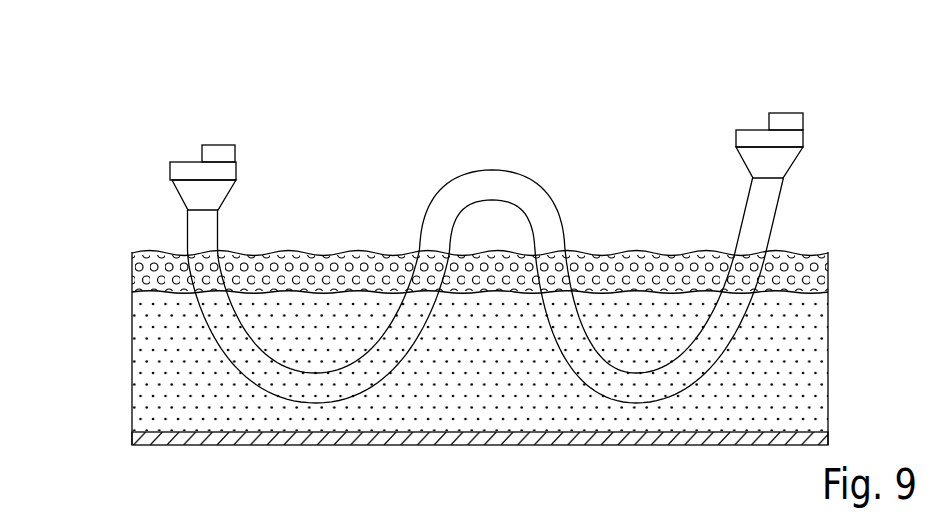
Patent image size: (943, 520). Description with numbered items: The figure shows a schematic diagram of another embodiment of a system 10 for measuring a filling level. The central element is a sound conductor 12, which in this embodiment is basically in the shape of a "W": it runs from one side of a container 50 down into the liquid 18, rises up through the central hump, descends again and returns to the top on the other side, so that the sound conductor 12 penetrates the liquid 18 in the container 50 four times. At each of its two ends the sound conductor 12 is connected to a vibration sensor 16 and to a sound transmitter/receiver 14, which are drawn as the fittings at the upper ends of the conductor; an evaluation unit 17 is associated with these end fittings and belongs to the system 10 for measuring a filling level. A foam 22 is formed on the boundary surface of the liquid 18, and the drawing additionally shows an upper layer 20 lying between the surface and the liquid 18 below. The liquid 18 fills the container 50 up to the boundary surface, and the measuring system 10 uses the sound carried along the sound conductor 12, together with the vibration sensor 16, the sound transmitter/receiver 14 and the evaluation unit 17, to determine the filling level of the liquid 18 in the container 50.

The system for measuring a filling level 10 is at (449, 210).
The sound conductor 12 is at (487, 180).
The sound transmitter/receiver 14 is at (190, 172).
The vibration sensor 16 is at (190, 190).
The evaluation unit 17 is at (217, 152).
The liquid 18 is at (624, 320).
The granular top layer 20 is at (671, 216).
The foam 22 is at (358, 257).
The container 50 is at (178, 445).